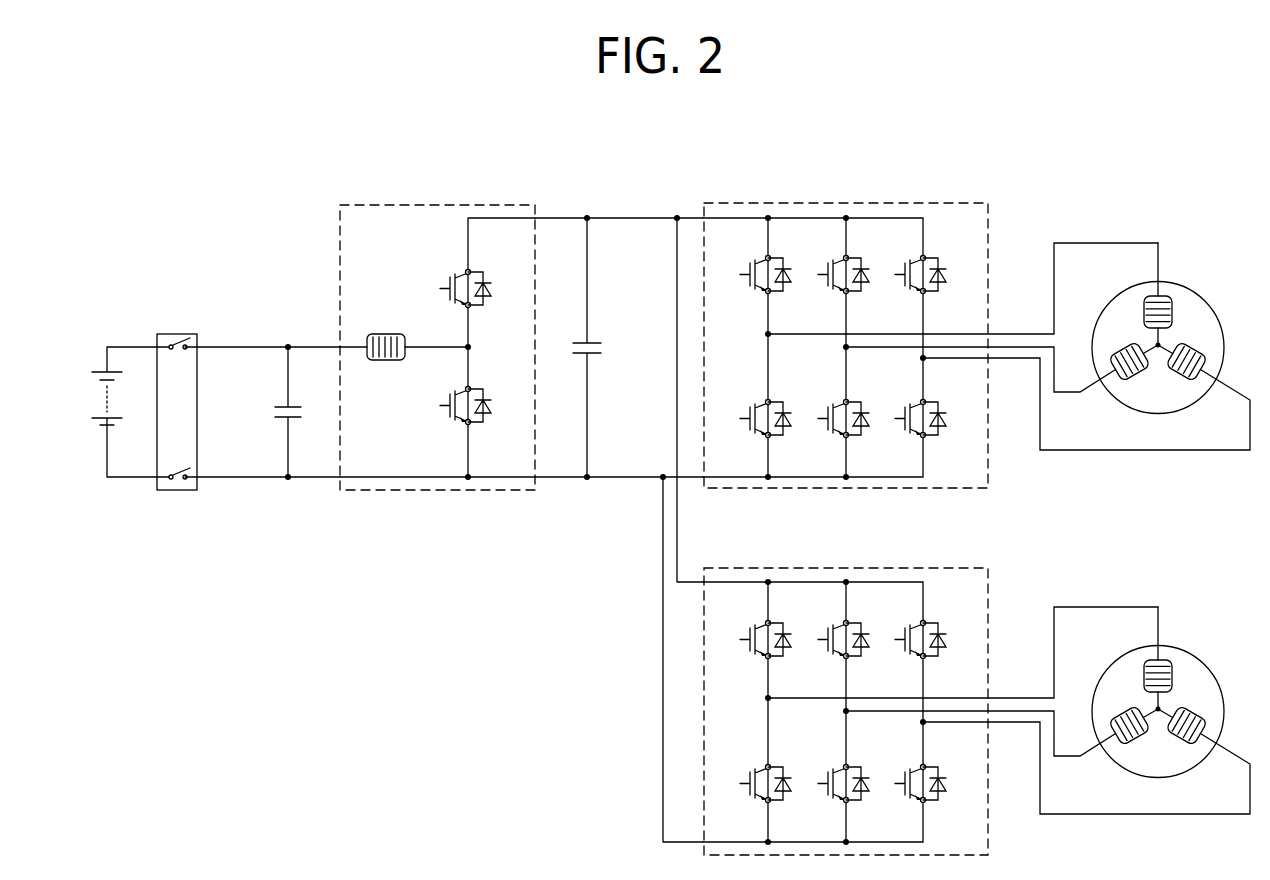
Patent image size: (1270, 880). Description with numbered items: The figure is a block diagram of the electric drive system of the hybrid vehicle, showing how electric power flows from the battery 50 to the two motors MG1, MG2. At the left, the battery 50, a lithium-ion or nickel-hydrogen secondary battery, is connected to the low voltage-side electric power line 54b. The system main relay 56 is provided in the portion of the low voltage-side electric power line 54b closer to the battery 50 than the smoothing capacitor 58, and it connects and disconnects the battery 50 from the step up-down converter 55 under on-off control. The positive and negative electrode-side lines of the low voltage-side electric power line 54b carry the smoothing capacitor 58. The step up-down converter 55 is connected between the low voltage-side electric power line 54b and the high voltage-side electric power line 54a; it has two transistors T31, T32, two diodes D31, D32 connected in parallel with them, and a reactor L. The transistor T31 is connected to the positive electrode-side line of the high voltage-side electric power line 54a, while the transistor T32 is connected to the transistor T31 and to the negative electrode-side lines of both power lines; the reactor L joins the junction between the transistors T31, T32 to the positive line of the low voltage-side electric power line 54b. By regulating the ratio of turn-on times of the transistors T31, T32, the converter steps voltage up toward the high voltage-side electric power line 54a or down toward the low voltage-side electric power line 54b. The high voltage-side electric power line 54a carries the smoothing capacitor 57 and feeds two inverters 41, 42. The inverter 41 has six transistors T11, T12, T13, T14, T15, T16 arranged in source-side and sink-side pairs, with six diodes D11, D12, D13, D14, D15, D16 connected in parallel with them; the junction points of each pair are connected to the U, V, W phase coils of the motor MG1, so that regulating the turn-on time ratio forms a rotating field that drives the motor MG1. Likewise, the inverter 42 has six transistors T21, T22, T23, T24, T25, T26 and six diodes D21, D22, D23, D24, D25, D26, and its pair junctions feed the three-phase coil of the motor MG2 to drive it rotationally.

The battery 50 is at (98, 345).
The system main relay 56 is at (177, 332).
The low voltage-side electric power line 54b is at (249, 349).
The smoothing capacitor 58 is at (295, 405).
The step up-down converter 55 is at (431, 203).
The reactor L is at (383, 333).
The transistor T31 is at (450, 284).
The transistor T32 is at (450, 401).
The diode D31 is at (488, 296).
The diode D32 is at (488, 413).
The smoothing capacitor 57 is at (592, 340).
The high voltage-side electric power line 54a is at (652, 220).
The inverter 41 is at (847, 203).
The inverter 42 is at (847, 568).
The transistor T11 is at (750, 270).
The transistor T12 is at (828, 270).
The transistor T13 is at (905, 270).
The transistor T14 is at (750, 414).
The transistor T15 is at (828, 414).
The transistor T16 is at (905, 414).
The diode D11 is at (788, 282).
The diode D12 is at (866, 282).
The diode D13 is at (943, 282).
The diode D14 is at (788, 426).
The diode D15 is at (866, 426).
The diode D16 is at (943, 426).
The transistor T21 is at (750, 635).
The transistor T22 is at (828, 635).
The transistor T23 is at (905, 635).
The transistor T24 is at (750, 779).
The transistor T25 is at (828, 779).
The transistor T26 is at (905, 779).
The diode D21 is at (788, 647).
The diode D22 is at (866, 647).
The diode D23 is at (943, 647).
The diode D24 is at (788, 791).
The diode D25 is at (866, 791).
The diode D26 is at (943, 791).
The motor MG1 is at (1189, 287).
The motor MG2 is at (1189, 651).
The U phase U is at (1154, 472).
The V phase V is at (1111, 547).
The W phase W is at (1205, 547).